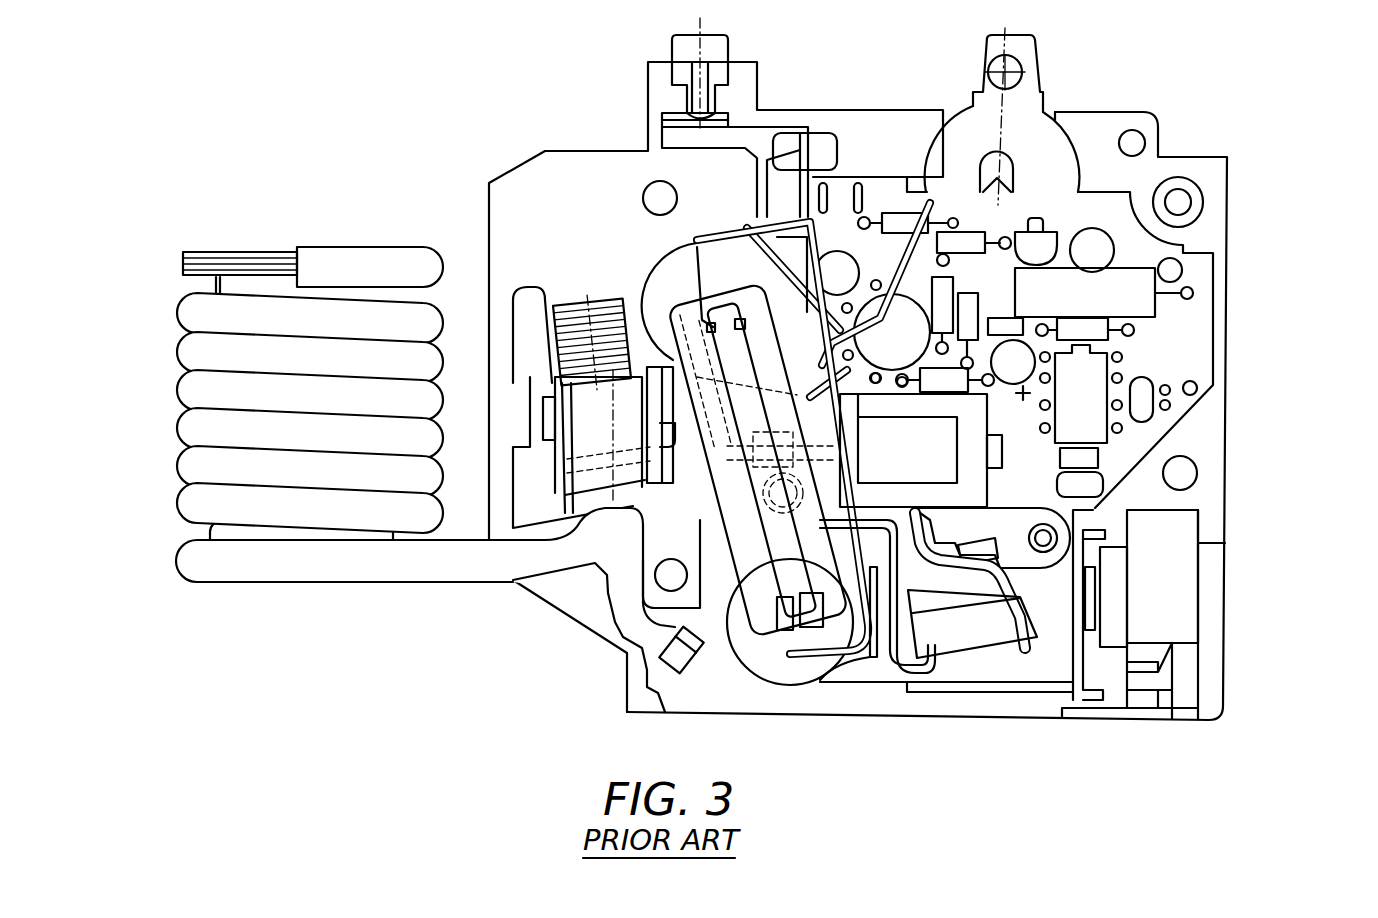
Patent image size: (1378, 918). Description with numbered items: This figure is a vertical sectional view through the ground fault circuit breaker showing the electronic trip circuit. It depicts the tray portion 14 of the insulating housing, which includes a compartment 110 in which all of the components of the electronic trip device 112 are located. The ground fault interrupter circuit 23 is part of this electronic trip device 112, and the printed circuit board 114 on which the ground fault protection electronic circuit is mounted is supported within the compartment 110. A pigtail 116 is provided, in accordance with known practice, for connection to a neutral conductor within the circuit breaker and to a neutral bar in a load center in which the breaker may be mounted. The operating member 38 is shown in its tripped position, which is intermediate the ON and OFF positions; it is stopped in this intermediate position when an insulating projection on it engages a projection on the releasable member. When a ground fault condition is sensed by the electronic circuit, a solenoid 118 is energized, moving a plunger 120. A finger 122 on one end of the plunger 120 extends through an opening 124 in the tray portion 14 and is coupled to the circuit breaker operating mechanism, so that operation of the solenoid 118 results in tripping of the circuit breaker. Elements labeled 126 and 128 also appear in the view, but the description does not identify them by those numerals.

The tray portion 14 is at (1110, 123).
The ground fault interrupter circuit 23 is at (1048, 466).
The operating member 38 is at (1053, 163).
The compartment 110 is at (1250, 286).
The electronic trip device 112 is at (1044, 502).
The printed circuit board 114 is at (1195, 357).
The pigtail 116 is at (388, 567).
The solenoid 118 is at (936, 451).
The plunger 120 is at (1014, 385).
The finger 122 is at (852, 466).
The opening 124 is at (713, 490).
The bimetal 126 is at (975, 647).
The trip lever 128 is at (938, 515).